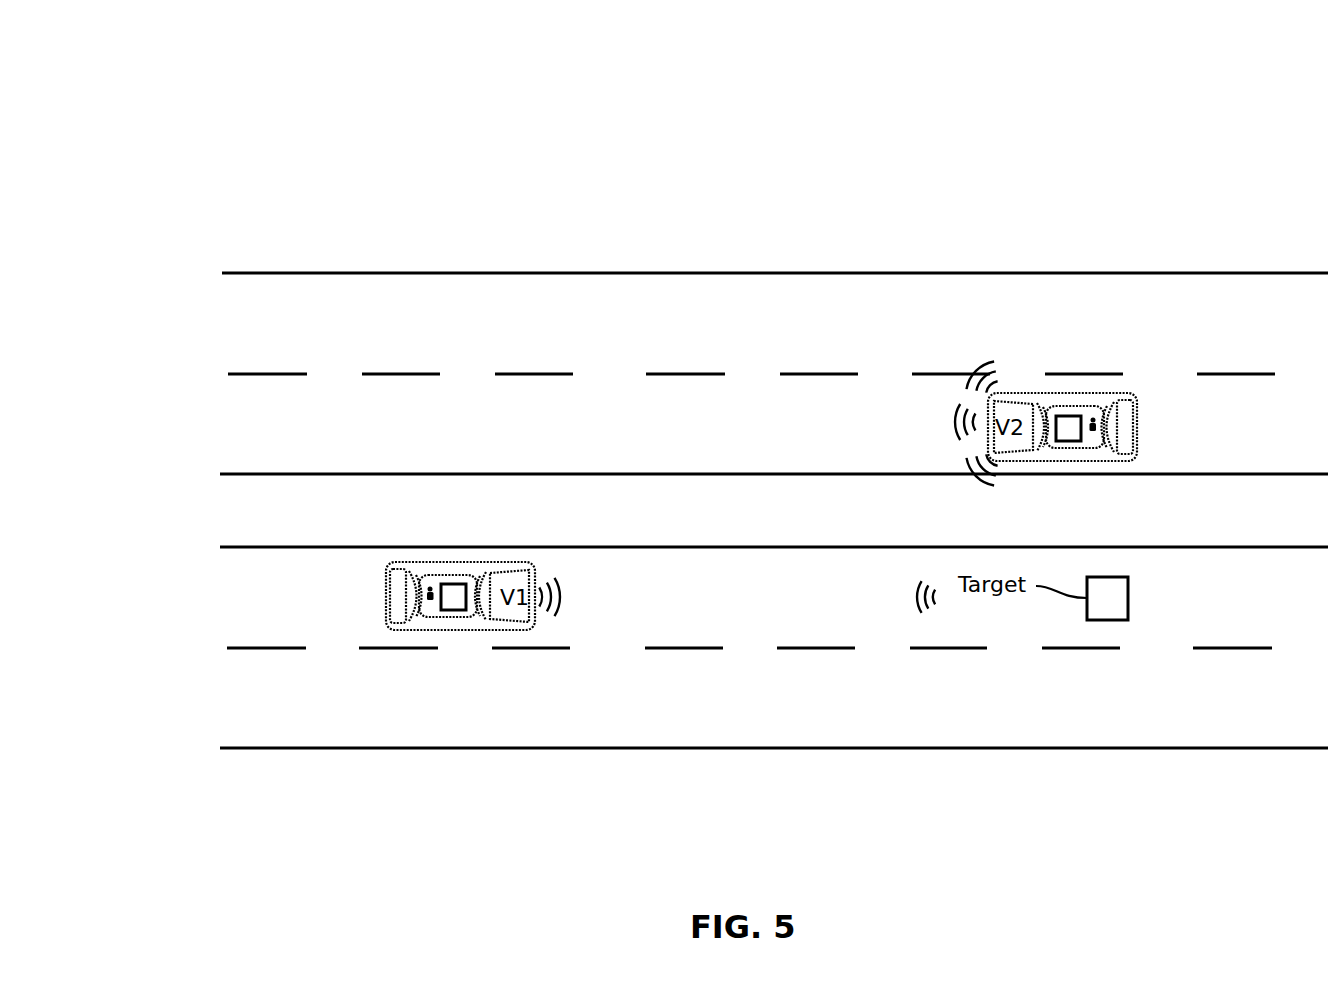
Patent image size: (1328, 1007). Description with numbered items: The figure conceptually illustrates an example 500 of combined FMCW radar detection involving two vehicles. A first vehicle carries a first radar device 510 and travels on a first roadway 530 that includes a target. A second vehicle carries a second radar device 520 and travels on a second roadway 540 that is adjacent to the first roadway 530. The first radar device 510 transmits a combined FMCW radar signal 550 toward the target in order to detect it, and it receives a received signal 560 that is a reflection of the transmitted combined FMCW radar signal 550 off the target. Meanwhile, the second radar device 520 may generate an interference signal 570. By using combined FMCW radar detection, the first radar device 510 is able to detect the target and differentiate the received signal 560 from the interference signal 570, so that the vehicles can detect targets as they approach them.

The example 500 is at (210, 56).
The first radar device 510 is at (456, 584).
The second radar device 520 is at (1071, 416).
The first roadway 530 is at (826, 786).
The second roadway 540 is at (820, 260).
The combined FMCW radar signal 550 is at (582, 595).
The received signal 560 is at (896, 591).
The interference signal 570 is at (946, 412).